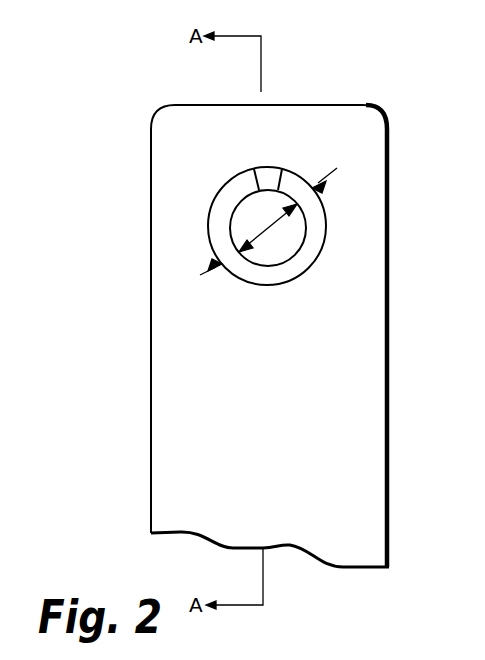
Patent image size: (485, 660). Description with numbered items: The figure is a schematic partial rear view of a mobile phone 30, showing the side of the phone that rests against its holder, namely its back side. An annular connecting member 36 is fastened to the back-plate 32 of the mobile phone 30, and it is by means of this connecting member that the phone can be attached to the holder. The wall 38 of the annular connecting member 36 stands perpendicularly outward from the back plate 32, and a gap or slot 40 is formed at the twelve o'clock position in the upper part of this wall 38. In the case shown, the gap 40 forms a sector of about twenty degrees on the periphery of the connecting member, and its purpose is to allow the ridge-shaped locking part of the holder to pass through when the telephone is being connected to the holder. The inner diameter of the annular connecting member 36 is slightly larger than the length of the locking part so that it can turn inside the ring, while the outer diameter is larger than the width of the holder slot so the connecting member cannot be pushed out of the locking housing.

The mobile phone 30 is at (113, 90).
The back-plate 32 is at (160, 351).
The annular connecting member 36 is at (223, 230).
The wall 38 is at (245, 182).
The gap or slot 40 is at (270, 176).